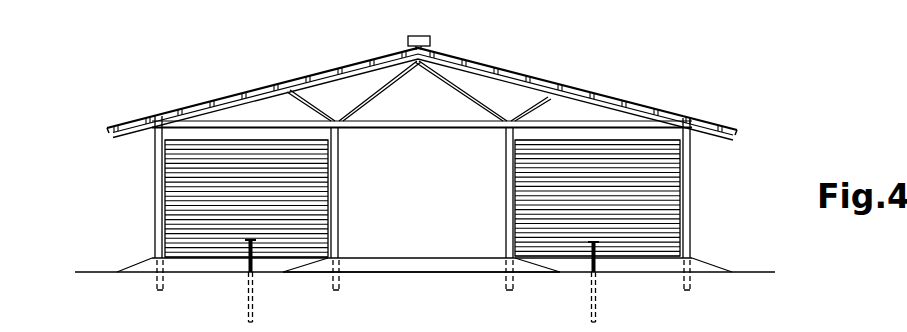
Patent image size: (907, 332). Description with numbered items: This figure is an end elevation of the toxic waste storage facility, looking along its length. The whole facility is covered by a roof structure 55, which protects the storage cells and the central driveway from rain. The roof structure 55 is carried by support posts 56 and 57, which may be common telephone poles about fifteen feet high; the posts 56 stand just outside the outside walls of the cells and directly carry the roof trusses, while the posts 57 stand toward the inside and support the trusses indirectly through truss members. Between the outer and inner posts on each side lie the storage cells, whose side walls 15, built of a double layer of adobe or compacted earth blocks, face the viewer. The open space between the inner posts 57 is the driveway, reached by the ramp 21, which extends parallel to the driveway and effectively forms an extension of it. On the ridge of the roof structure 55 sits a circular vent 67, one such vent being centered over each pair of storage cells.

The side wall 15 is at (177, 226).
The ramp 21 is at (388, 262).
The roof structure 55 is at (610, 81).
The outside support post 56 is at (157, 186).
The inside support post 57 is at (338, 186).
The circular vent 67 is at (431, 41).